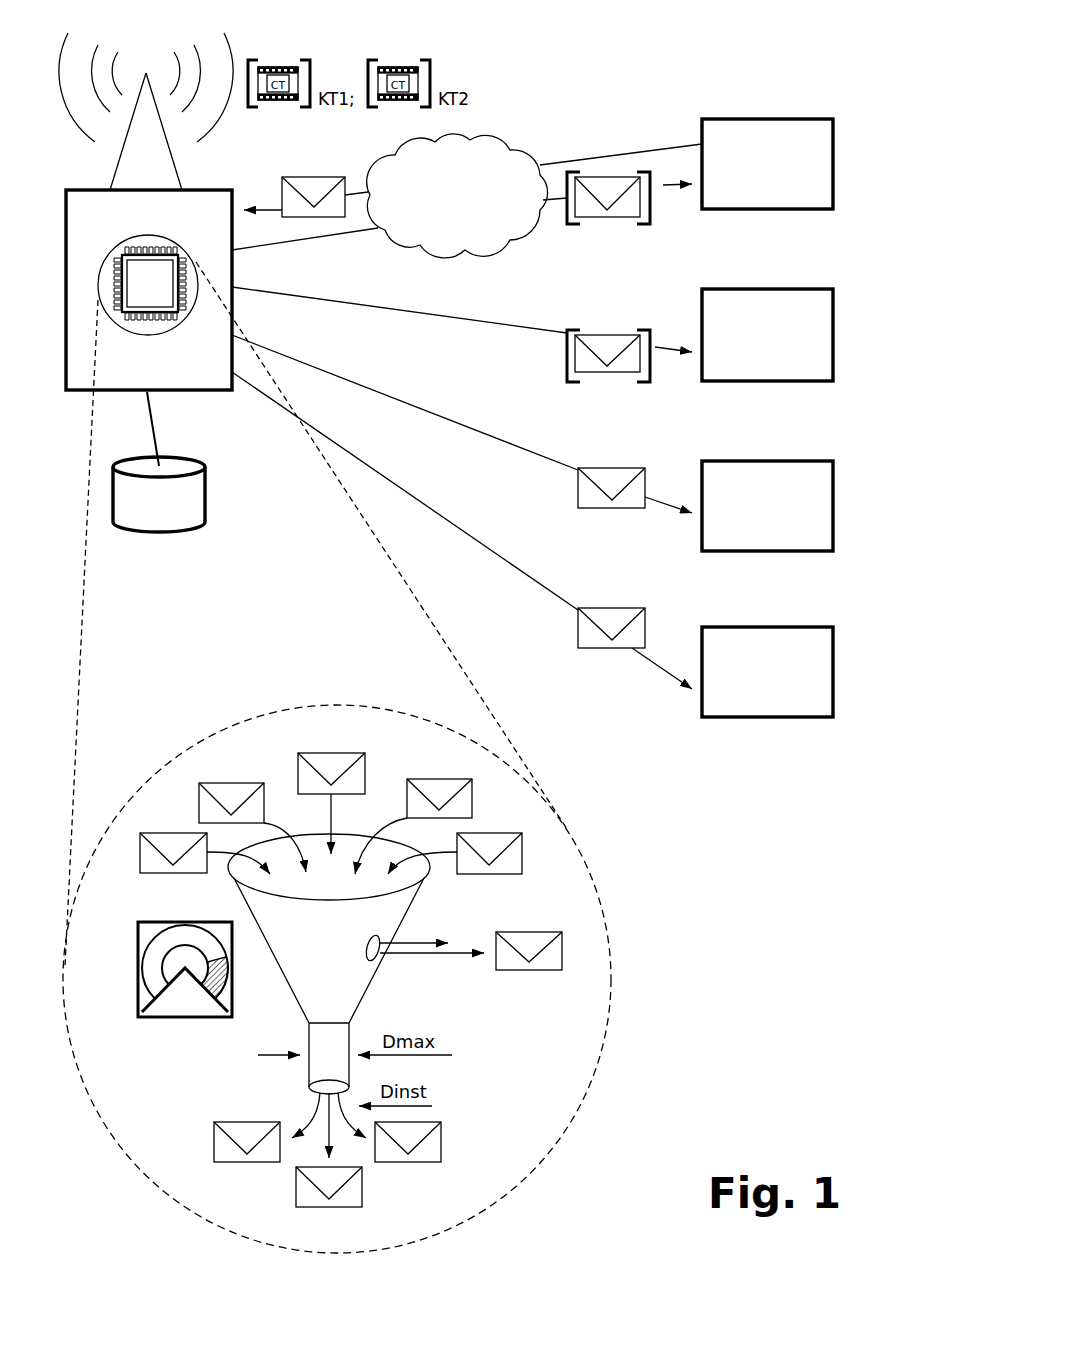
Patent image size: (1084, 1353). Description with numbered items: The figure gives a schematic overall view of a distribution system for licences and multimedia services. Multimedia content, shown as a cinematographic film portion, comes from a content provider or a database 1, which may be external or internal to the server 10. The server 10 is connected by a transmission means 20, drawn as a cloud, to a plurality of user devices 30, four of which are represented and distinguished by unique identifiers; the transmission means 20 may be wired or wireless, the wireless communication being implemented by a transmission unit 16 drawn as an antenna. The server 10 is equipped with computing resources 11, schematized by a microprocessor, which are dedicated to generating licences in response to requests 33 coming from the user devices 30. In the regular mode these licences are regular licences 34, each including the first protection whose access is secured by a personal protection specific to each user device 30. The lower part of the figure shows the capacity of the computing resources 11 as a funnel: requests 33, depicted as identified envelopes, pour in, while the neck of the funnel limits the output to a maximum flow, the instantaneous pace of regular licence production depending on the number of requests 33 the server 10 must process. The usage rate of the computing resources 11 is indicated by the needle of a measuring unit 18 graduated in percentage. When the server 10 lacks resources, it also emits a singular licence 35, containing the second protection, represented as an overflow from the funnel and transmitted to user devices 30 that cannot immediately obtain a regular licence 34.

The database 1 is at (196, 508).
The server 10 is at (208, 378).
The computing resources 11 is at (165, 327).
The transmission unit 16 is at (230, 132).
The measuring unit 18 is at (180, 1017).
The transmission means 20 is at (473, 204).
The user devices 30 is at (723, 133).
The requests 33 is at (322, 178).
The regular licence 34 is at (588, 178).
The singular licence 35 is at (598, 468).